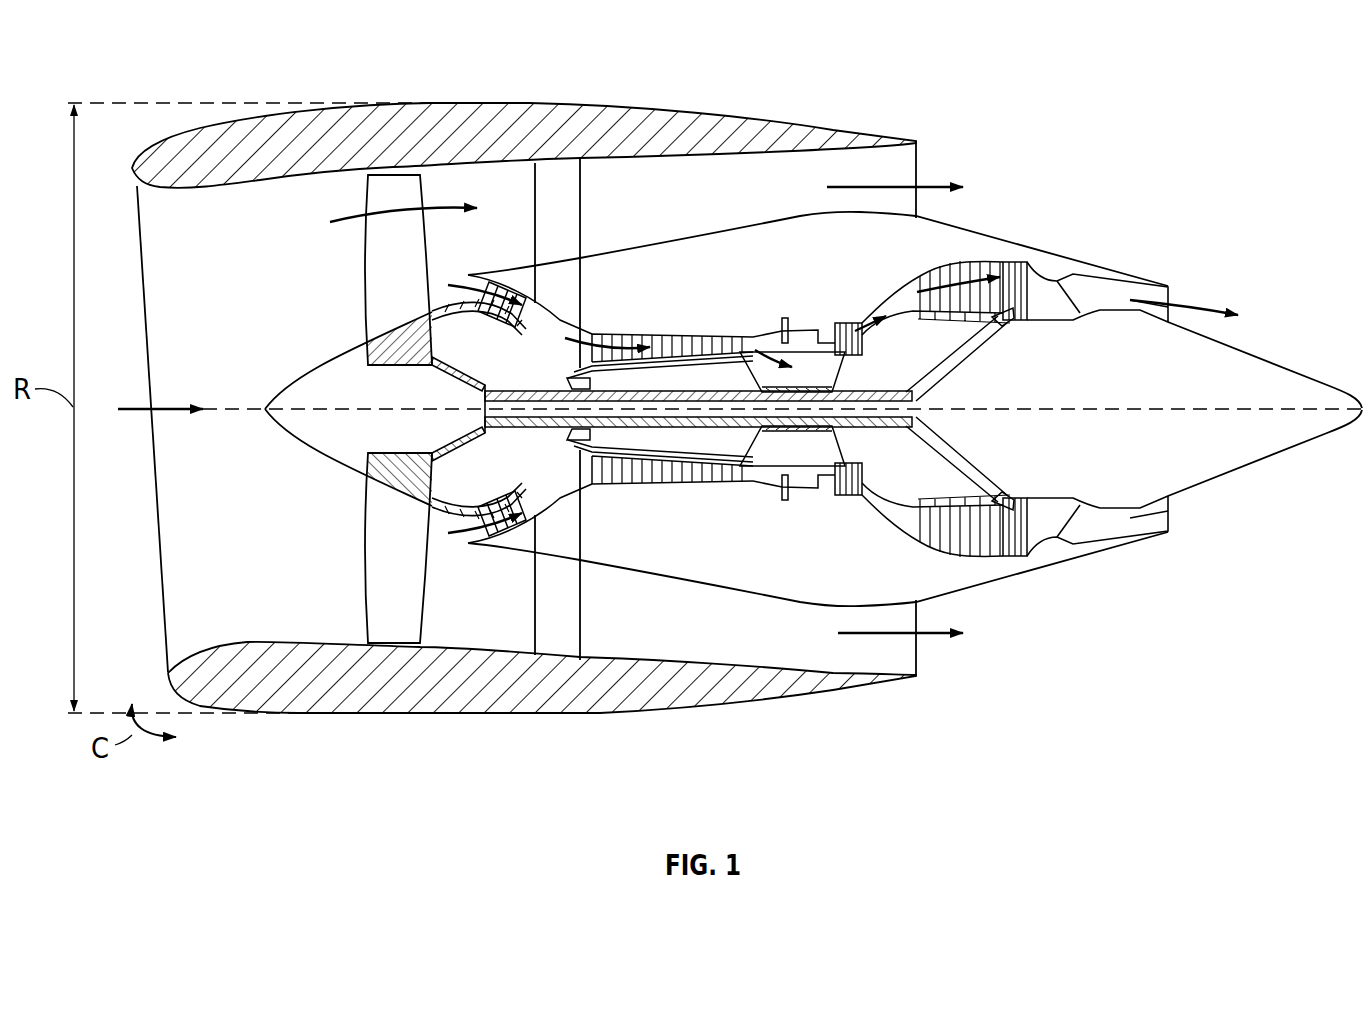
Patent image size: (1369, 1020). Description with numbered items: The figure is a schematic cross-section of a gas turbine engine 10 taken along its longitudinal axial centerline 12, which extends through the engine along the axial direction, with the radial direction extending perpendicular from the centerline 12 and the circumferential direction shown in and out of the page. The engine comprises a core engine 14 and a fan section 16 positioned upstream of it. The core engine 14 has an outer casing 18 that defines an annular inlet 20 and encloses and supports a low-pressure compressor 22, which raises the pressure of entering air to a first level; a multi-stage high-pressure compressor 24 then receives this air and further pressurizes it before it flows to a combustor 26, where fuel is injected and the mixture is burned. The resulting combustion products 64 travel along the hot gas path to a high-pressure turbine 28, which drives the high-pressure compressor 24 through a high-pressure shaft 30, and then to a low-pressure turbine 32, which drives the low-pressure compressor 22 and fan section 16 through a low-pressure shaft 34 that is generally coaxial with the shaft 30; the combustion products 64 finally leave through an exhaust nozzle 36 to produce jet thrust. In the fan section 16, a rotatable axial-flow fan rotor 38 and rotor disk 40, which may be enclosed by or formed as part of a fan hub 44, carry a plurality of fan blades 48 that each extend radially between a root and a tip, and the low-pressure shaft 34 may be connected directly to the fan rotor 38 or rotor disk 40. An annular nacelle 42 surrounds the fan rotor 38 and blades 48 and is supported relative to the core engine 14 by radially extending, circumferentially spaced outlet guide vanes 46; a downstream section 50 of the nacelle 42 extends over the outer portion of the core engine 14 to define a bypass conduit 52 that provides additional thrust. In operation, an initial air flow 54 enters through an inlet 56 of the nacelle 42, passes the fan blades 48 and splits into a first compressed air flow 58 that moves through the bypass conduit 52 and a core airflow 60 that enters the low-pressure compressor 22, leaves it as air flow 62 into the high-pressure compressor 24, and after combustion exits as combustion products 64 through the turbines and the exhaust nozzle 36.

The gas turbine engine 10 is at (1090, 103).
The centerline 12 is at (1128, 405).
The core engine 14 is at (745, 268).
The fan section 16 is at (242, 247).
The outer casing 18 is at (757, 590).
The annular inlet 20 is at (470, 528).
The low-pressure compressor 22 is at (508, 523).
The high-pressure compressor 24 is at (612, 478).
The combustor 26 is at (807, 483).
The high-pressure turbine 28 is at (842, 497).
The high-pressure shaft 30 is at (823, 373).
The low-pressure turbine 32 is at (998, 545).
The low-pressure shaft 34 is at (558, 388).
The exhaust nozzle 36 is at (1170, 297).
The fan rotor 38 is at (438, 370).
The rotor disk 40 is at (370, 347).
The nacelle 42 is at (398, 715).
The fan hub 44 is at (312, 458).
The outlet guide vanes 46 is at (582, 210).
The fan blades 48 is at (363, 543).
The downstream section 50 is at (778, 124).
The bypass conduit 52 is at (723, 209).
The initial air flow 54 is at (877, 185).
The inlet 56 is at (167, 635).
The first compressed air flow 58 is at (345, 217).
The core airflow 60 is at (462, 283).
The air flow 62 is at (597, 345).
The combustion products 64 is at (863, 327).